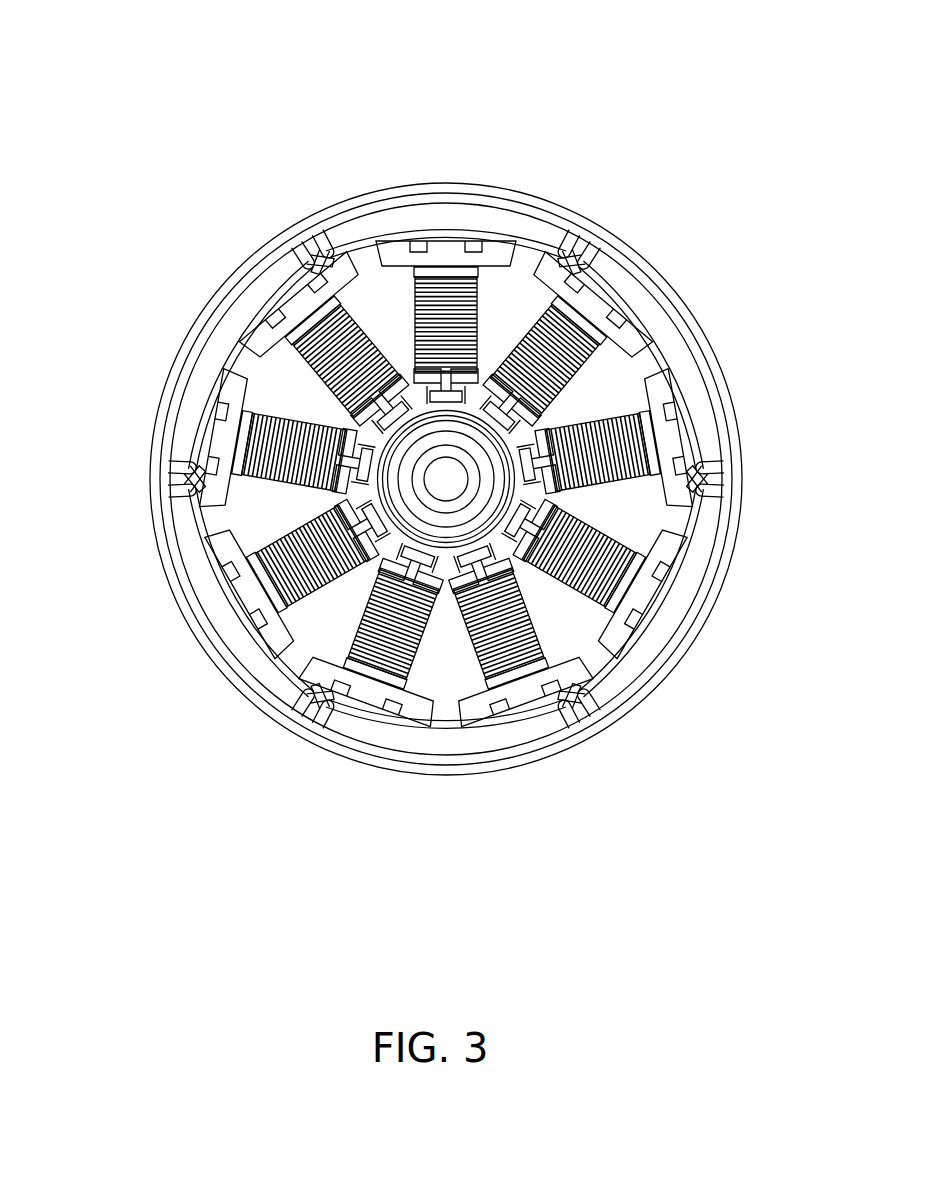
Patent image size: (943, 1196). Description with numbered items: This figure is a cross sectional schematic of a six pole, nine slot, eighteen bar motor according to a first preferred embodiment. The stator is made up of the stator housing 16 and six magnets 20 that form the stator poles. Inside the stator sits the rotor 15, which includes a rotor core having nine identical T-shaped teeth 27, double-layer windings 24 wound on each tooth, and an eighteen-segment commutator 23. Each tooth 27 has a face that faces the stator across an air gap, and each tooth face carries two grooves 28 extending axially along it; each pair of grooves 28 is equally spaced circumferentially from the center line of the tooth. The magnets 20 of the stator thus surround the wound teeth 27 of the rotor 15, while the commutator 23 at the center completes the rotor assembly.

The rotor 15 is at (590, 307).
The stator housing 16 is at (192, 344).
The magnets 20 is at (205, 556).
The commutator 23 is at (355, 435).
The double-layer windings 24 is at (292, 575).
The T-shaped teeth 27 is at (215, 440).
The grooves 28 is at (478, 246).